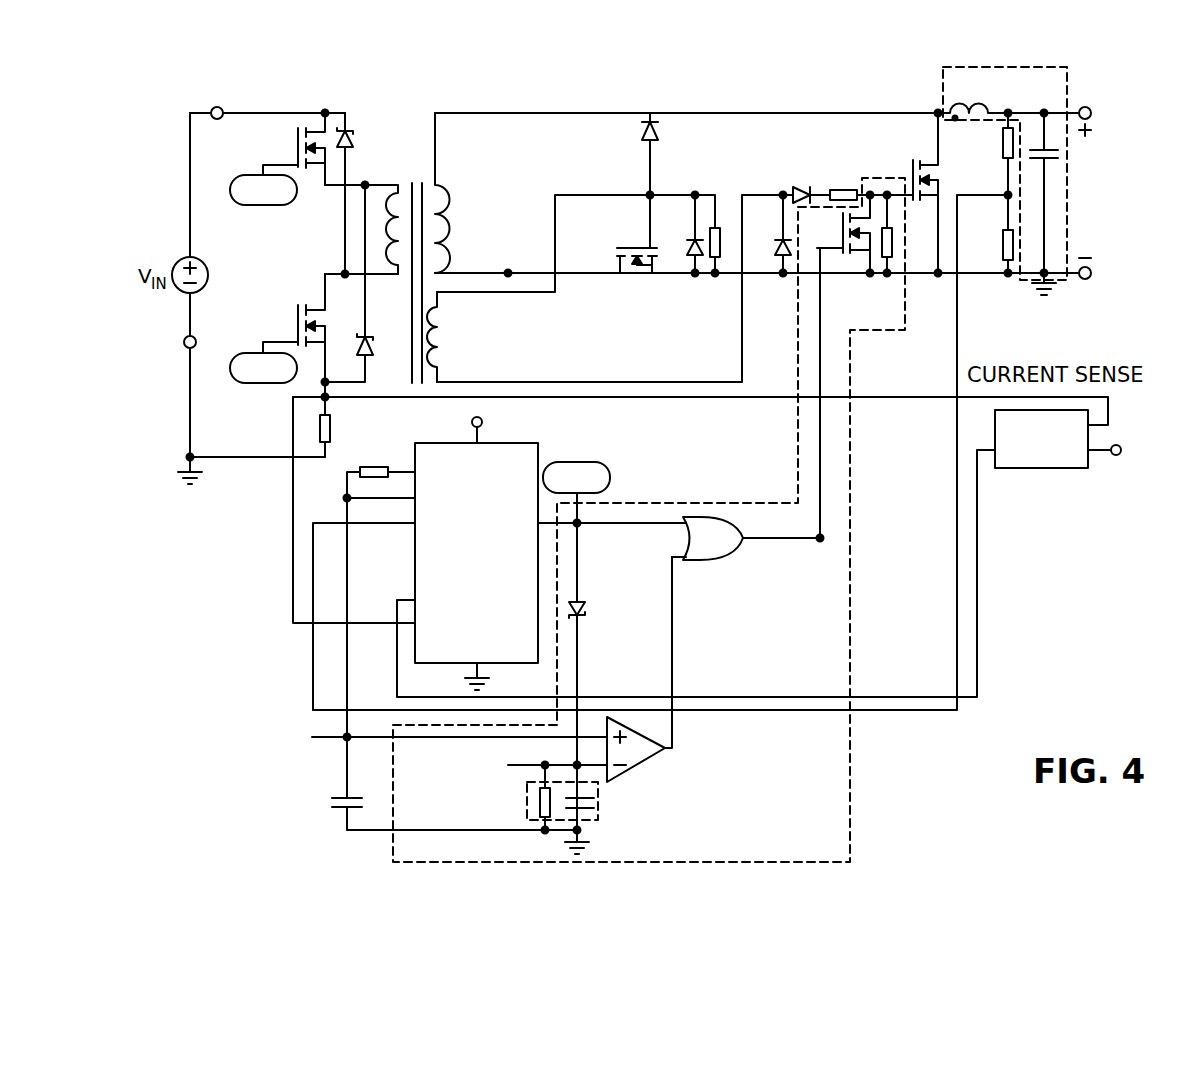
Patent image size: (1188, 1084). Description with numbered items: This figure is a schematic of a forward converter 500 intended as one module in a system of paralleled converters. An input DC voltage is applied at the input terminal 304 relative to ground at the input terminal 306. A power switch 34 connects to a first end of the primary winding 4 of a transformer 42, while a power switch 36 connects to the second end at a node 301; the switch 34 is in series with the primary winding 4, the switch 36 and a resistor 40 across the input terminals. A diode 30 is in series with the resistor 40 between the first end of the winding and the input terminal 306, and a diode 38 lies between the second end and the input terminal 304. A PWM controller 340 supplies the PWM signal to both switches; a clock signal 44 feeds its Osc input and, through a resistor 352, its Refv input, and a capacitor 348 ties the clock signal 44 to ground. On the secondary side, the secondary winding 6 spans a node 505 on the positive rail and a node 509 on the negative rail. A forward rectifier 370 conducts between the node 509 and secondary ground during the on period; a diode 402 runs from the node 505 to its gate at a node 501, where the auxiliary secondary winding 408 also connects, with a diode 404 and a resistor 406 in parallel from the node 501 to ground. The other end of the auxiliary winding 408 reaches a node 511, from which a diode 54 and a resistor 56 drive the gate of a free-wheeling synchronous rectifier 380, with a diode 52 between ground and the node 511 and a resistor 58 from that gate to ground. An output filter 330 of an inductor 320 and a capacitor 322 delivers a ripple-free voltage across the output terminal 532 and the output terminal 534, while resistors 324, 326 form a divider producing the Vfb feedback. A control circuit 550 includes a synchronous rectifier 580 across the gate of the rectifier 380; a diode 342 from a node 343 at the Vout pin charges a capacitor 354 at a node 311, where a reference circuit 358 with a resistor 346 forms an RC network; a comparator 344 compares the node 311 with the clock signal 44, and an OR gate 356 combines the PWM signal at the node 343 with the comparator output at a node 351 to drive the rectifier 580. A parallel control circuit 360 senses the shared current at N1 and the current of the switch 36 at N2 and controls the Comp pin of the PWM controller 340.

The converter 500 is at (514, 86).
The input terminal 304 is at (255, 94).
The input terminal 306 is at (185, 342).
The power switch 34 is at (298, 150).
The power switch 36 is at (298, 330).
The diode 38 is at (348, 128).
The diode 30 is at (367, 336).
The node 301 is at (345, 272).
The transformer 42 is at (405, 180).
The primary winding 4 is at (361, 229).
The secondary winding 6 is at (440, 226).
The auxiliary secondary winding 408 is at (442, 345).
The node 509 is at (509, 271).
The node 511 is at (785, 195).
The node 505 is at (652, 113).
The diode 402 is at (650, 148).
The node 501 is at (653, 194).
The forward rectifier 370 is at (629, 234).
The diode 404 is at (693, 243).
The resistor 406 is at (716, 262).
The diode 52 is at (783, 240).
The diode 54 is at (804, 187).
The resistor 56 is at (843, 190).
The synchronous rectifier 580 is at (843, 244).
The resistor 58 is at (889, 262).
The free-wheeling synchronous rectifier 380 is at (913, 166).
The output filter 330 is at (943, 84).
The inductor 320 is at (985, 109).
The resistor 324 is at (1005, 148).
The resistor 326 is at (1005, 245).
The capacitor 322 is at (1052, 163).
The output terminal 532 is at (1087, 106).
The output terminal 534 is at (1087, 279).
The resistor 40 is at (322, 432).
The PWM controller 340 is at (464, 666).
The resistor 352 is at (374, 467).
The node 343 is at (579, 525).
The diode 342 is at (579, 618).
The OR gate 356 is at (700, 563).
The node 351 is at (821, 545).
The comparator 344 is at (668, 753).
The clock signal 44 is at (333, 739).
The capacitor 348 is at (345, 809).
The node 311 is at (510, 765).
The reference circuit 358 is at (527, 800).
The resistor 346 is at (540, 803).
The capacitor 354 is at (596, 803).
The control circuit 550 is at (852, 790).
The parallel control circuit 360 is at (1088, 440).